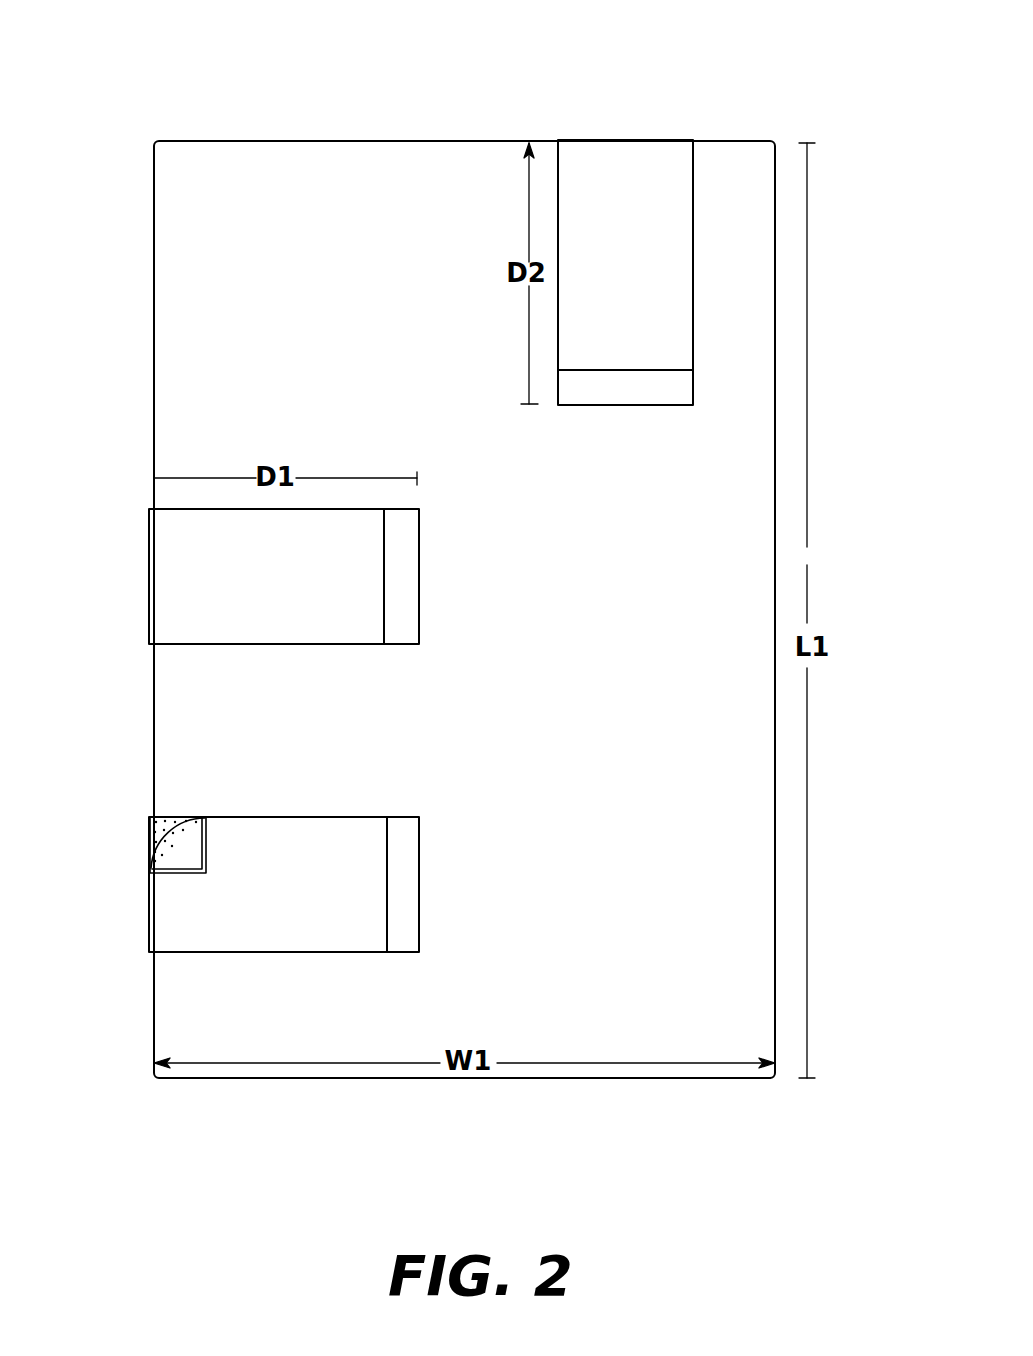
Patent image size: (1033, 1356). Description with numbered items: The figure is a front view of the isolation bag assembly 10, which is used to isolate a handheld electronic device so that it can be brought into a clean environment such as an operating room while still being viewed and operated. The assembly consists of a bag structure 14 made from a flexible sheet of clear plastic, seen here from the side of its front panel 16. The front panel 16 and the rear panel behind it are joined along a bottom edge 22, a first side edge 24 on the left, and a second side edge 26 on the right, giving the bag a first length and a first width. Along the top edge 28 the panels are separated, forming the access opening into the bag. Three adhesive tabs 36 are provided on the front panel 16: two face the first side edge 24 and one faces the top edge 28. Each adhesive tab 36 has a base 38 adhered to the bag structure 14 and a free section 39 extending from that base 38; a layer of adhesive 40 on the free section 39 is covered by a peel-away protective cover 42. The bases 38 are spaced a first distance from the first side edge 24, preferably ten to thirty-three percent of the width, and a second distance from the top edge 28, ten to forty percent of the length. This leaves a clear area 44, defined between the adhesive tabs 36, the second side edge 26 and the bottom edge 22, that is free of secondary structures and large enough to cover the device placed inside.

The isolation bag assembly 10 is at (785, 117).
The bag structure 14 is at (153, 273).
The front panel 16 is at (208, 392).
The bottom edge 22 is at (662, 1078).
The first side edge 24 is at (153, 707).
The second side edge 26 is at (775, 560).
The top edge 28 is at (443, 140).
The adhesive tab 36 is at (403, 552).
The base 38 is at (410, 903).
The free section 39 is at (168, 963).
The adhesive 40 is at (167, 827).
The peel-away protective cover 42 is at (187, 860).
The clear area 44 is at (658, 475).